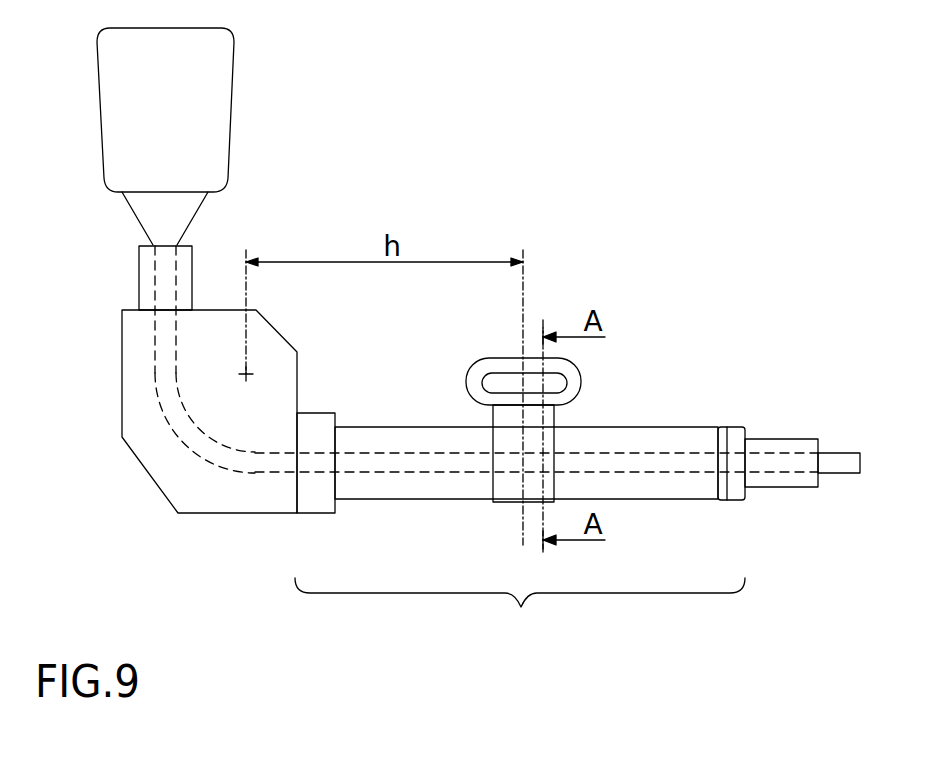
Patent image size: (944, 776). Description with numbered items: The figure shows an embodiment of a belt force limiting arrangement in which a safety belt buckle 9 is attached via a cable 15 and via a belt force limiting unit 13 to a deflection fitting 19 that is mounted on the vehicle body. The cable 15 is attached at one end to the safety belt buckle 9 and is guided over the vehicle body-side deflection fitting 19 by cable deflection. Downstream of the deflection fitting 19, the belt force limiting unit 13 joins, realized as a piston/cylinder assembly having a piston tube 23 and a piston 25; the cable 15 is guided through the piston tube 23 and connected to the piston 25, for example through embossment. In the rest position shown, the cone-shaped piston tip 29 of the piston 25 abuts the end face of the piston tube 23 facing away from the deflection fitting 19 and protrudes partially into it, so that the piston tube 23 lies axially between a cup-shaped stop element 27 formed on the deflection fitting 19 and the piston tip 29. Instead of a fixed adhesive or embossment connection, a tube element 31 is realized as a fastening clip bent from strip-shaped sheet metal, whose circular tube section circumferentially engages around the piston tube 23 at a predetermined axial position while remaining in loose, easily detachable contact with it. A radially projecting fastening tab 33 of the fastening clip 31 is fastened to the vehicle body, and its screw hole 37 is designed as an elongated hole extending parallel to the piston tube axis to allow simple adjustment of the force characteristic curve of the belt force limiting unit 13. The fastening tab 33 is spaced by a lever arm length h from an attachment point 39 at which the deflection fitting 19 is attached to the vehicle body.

The safety belt buckle 9 is at (230, 80).
The belt force limiting unit 13 is at (520, 610).
The cable 15 is at (186, 439).
The deflection fitting 19 is at (121, 345).
The piston tube 23 is at (415, 498).
The piston 25 is at (737, 499).
The cup-shaped stop element 27 is at (312, 504).
The cone-shaped piston tip 29 is at (723, 432).
The tube element 31 is at (493, 445).
The fastening tab 33 is at (478, 372).
The screw hole 37 is at (565, 383).
The attachment point 39 is at (246, 374).